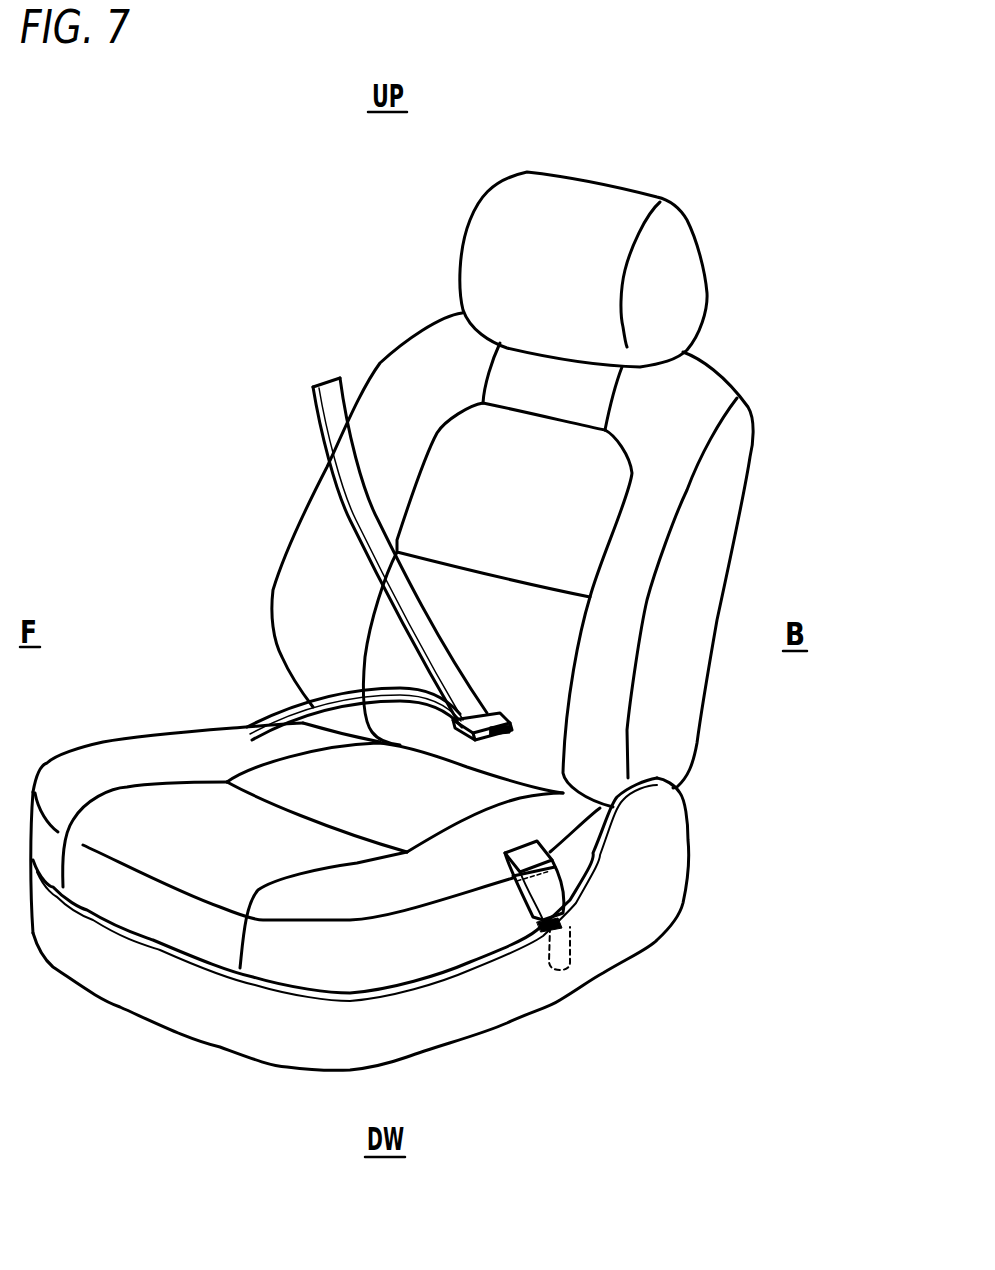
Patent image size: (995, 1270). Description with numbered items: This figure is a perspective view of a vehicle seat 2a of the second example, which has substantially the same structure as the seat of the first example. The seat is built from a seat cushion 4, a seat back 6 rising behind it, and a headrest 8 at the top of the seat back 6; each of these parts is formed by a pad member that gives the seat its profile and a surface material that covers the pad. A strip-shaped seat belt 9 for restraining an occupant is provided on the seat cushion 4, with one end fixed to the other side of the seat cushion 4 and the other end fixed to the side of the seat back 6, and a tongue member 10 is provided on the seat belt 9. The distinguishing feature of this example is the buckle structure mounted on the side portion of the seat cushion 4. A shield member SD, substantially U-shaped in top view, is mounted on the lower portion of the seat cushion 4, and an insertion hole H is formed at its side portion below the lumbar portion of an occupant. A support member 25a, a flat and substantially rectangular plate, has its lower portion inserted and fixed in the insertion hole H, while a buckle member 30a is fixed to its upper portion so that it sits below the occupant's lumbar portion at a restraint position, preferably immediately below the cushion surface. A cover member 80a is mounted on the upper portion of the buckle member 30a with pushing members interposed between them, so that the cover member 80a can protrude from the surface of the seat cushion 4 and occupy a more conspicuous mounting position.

The vehicle seat 2a is at (619, 176).
The headrest 8 is at (493, 234).
The seat back 6 is at (330, 493).
The seat belt 9 is at (417, 693).
The tongue member 10 is at (495, 713).
The seat cushion 4 is at (127, 745).
The cover member 80a is at (553, 850).
The buckle member 30a is at (550, 900).
The support member 25a is at (570, 943).
The insertion hole H is at (547, 933).
The shield member SD is at (500, 1007).